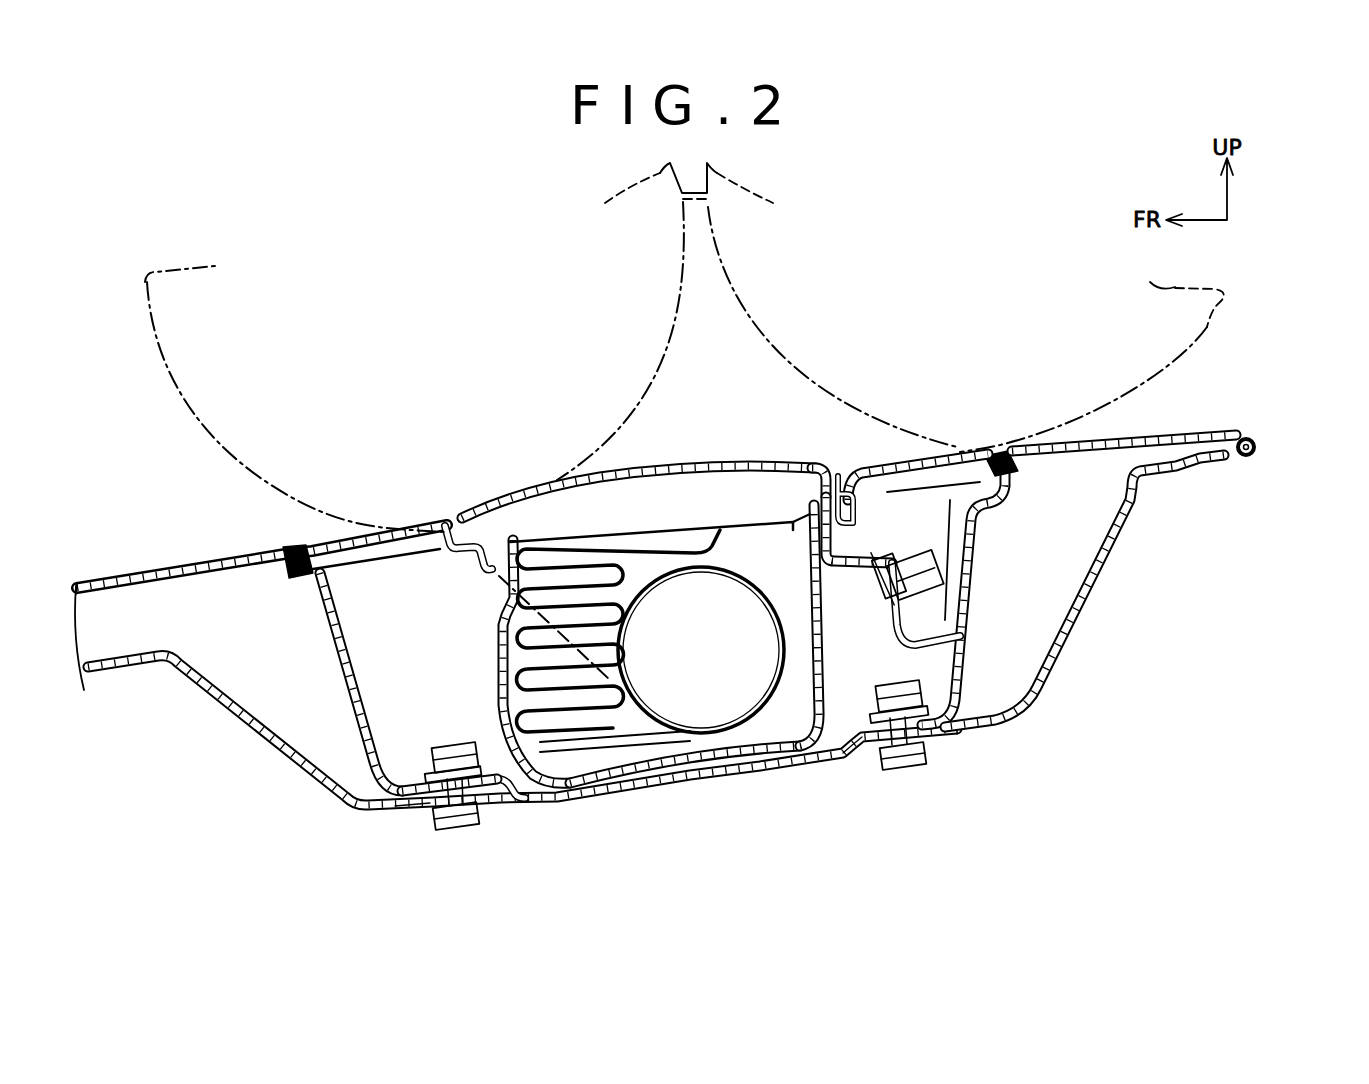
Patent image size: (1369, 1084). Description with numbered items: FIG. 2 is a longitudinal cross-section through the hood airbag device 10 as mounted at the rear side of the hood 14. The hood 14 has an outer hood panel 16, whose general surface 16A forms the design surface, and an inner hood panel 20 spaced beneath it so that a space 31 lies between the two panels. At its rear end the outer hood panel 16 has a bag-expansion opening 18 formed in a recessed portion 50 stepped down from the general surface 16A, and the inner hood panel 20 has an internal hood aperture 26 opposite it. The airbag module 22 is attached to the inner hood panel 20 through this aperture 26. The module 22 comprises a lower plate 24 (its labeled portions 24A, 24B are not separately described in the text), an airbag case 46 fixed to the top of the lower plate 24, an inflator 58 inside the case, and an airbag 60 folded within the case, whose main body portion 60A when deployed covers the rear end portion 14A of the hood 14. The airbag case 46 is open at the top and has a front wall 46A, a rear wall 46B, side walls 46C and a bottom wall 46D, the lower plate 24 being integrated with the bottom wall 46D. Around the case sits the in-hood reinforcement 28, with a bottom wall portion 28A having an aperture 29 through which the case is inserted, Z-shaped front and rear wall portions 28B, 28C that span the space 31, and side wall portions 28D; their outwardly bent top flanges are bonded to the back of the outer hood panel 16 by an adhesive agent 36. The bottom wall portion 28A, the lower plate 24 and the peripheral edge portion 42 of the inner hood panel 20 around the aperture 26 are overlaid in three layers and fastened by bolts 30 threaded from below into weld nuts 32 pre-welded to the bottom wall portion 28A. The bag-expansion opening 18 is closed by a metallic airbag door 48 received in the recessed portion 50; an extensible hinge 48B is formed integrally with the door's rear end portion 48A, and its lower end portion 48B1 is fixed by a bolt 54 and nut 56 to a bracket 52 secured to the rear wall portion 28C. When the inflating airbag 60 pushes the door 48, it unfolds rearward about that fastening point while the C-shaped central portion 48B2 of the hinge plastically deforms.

The hood airbag device 10 is at (117, 405).
The hood 14 is at (1180, 424).
The rear end portion of the hood 14A is at (1262, 452).
The outer hood panel 16 is at (261, 580).
The general surface of the outer hood panel 16A is at (128, 577).
The bag-expansion opening 18 is at (493, 570).
The inner hood panel 20 is at (1073, 633).
The airbag module 22 is at (553, 783).
The lower plate 24 is at (553, 768).
The lower plate front portion 24A is at (413, 805).
The lower plate rear portion 24B is at (947, 740).
The internal hood aperture 26 is at (508, 798).
The in-hood reinforcement 28 is at (644, 681).
The bottom wall portion 28A is at (486, 776).
The front wall portion 28B is at (352, 698).
The rear wall portion 28C is at (966, 588).
The side wall portions 28D is at (370, 556).
The aperture 29 is at (851, 753).
The bolts 30 is at (457, 820).
The space 31 is at (268, 624).
The weld nuts 32 is at (433, 761).
The adhesive agent 36 is at (295, 551).
The peripheral edge portion 42 is at (877, 768).
The airbag case 46 is at (645, 637).
The front wall 46A is at (505, 720).
The rear wall 46B is at (818, 663).
The side walls 46C is at (549, 536).
The bottom wall 46D is at (580, 792).
The airbag door 48 is at (758, 514).
The rear end portion of the airbag door 48A is at (830, 476).
The extensible hinge 48B is at (858, 569).
The lower end portion of the extensible hinge 48B1 is at (963, 634).
The central portion of the extensible hinge 48B2 is at (795, 518).
The recessed portion 50 is at (853, 477).
The bracket 52 is at (934, 533).
The bolt 54 is at (948, 565).
The nut 56 is at (905, 560).
The inflator 58 is at (715, 708).
The airbag 60 is at (731, 447).
The main body portion 60A is at (1213, 333).